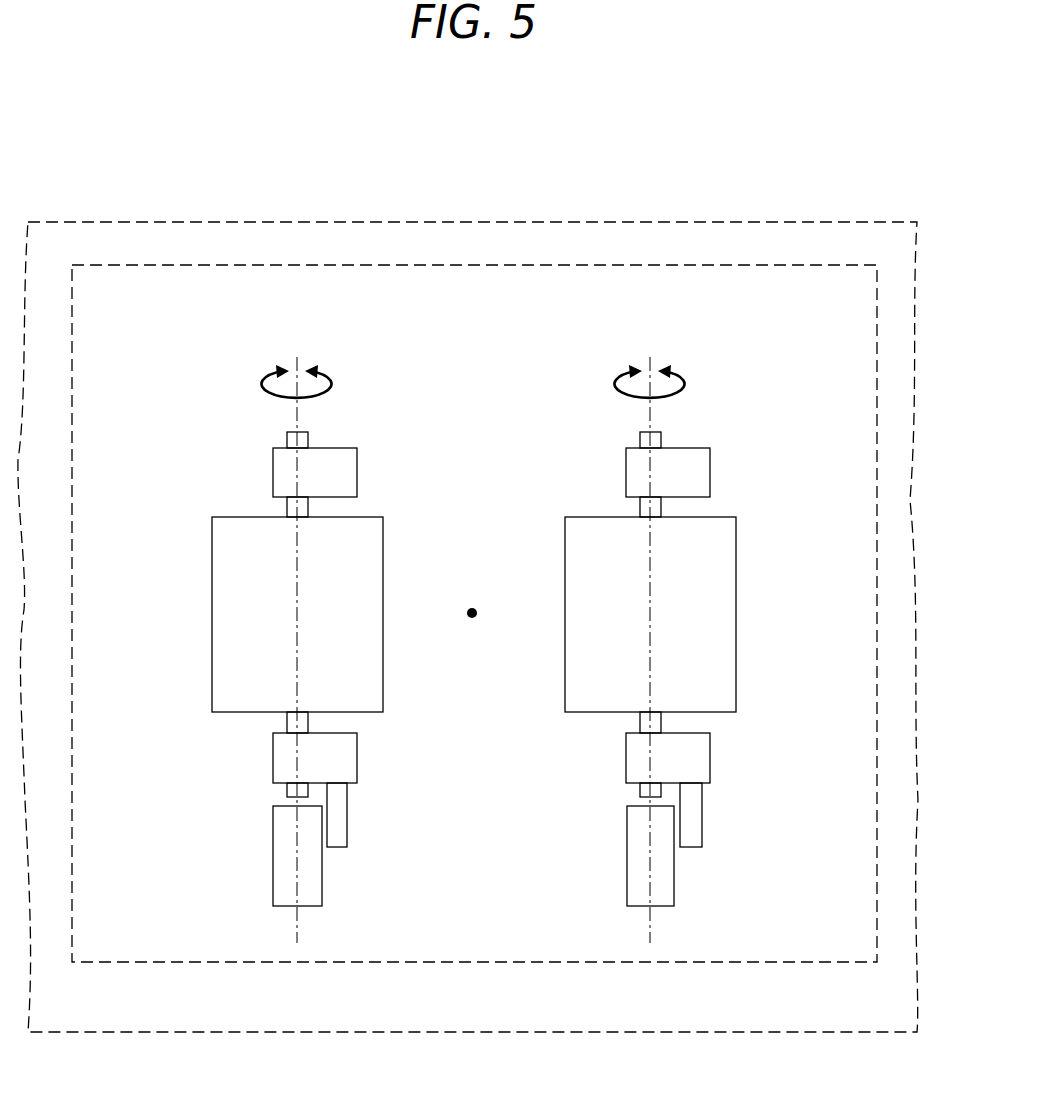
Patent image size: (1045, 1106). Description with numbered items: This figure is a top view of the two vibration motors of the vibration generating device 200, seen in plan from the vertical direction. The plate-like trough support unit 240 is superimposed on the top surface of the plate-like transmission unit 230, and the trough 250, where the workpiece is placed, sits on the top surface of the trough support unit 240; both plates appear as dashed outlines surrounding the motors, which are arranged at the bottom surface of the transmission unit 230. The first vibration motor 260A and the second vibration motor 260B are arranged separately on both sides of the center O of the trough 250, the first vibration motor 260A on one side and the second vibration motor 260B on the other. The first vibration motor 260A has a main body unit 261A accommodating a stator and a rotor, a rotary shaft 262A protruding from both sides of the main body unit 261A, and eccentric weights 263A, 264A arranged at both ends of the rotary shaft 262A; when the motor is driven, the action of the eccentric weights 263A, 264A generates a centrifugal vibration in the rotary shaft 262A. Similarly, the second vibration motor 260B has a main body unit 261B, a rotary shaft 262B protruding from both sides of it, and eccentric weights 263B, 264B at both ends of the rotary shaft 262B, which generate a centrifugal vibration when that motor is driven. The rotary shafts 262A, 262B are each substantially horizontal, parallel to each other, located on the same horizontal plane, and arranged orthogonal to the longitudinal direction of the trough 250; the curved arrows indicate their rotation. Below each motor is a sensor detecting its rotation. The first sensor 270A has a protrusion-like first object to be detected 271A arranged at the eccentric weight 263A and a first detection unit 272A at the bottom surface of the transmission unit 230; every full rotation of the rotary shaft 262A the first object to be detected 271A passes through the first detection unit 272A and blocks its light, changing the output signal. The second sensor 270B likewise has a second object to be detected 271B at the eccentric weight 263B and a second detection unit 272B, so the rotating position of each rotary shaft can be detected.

The vibration generating device 200 is at (822, 152).
The trough support unit 240 is at (468, 583).
The transmission unit 230 is at (367, 237).
The trough 250 is at (545, 295).
The first vibration motor 260A is at (275, 650).
The second vibration motor 260B is at (707, 650).
The main body unit 261A is at (223, 617).
The main body unit 261B is at (725, 614).
The rotary shaft 262A is at (285, 723).
The rotary shaft 262B is at (653, 723).
The eccentric weight 263A is at (343, 757).
The eccentric weight 263B is at (695, 760).
The eccentric weight 264A is at (343, 473).
The eccentric weight 264B is at (692, 473).
The first sensor 270A is at (218, 844).
The second sensor 270B is at (749, 844).
The first object to be detected 271A is at (333, 792).
The second object to be detected 271B is at (690, 823).
The first detection unit 272A is at (290, 855).
The second detection unit 272B is at (670, 885).
The center of the trough O is at (480, 599).